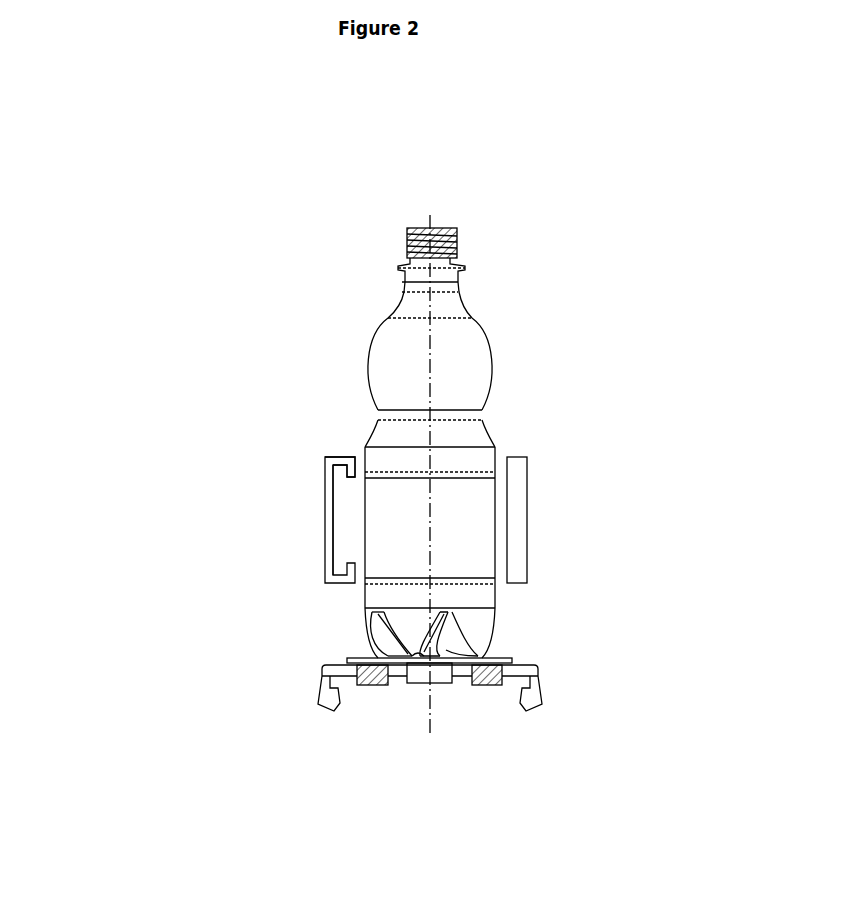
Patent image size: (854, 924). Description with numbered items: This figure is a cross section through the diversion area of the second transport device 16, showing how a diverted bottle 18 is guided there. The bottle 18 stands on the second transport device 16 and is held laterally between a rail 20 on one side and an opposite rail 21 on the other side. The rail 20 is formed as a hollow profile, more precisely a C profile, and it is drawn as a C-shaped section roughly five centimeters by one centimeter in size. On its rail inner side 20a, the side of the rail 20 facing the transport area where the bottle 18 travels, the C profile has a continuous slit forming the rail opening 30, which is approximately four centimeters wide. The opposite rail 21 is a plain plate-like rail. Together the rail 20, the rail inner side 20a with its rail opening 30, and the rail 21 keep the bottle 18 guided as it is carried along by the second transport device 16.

The bottle 18 is at (495, 360).
The rail 20 is at (323, 507).
The rail inner side 20a is at (327, 467).
The rail opening 30 is at (337, 552).
The rail 21 is at (527, 528).
The second transport device 16 is at (378, 685).